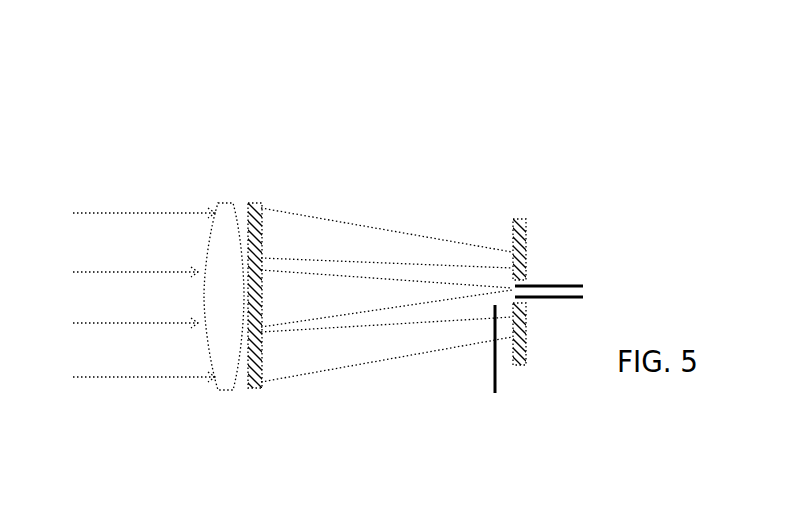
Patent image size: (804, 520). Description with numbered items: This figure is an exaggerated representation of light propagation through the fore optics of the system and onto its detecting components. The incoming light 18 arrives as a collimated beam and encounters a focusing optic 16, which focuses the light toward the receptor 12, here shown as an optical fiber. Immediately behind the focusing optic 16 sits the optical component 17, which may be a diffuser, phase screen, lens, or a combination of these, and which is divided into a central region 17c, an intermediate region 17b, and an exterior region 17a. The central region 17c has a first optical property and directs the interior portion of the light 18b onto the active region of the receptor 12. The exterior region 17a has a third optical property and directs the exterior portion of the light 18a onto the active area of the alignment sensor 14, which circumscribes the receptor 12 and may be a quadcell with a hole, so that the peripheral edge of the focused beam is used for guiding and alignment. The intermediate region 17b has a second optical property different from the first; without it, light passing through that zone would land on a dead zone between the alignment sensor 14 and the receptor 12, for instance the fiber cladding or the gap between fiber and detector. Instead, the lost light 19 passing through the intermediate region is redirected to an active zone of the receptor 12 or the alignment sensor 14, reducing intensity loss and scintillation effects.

The receptor 12 is at (522, 285).
The alignment sensor 14 is at (520, 282).
The focusing optic 16 is at (227, 222).
The optical component 17 is at (339, 344).
The exterior region 17a is at (258, 362).
The intermediate region 17b is at (258, 332).
The central region 17c is at (258, 308).
The incoming light 18 is at (97, 212).
The exterior portion of the light 18a is at (307, 250).
The interior portion of the light 18b is at (373, 295).
The lost light 19 is at (500, 363).